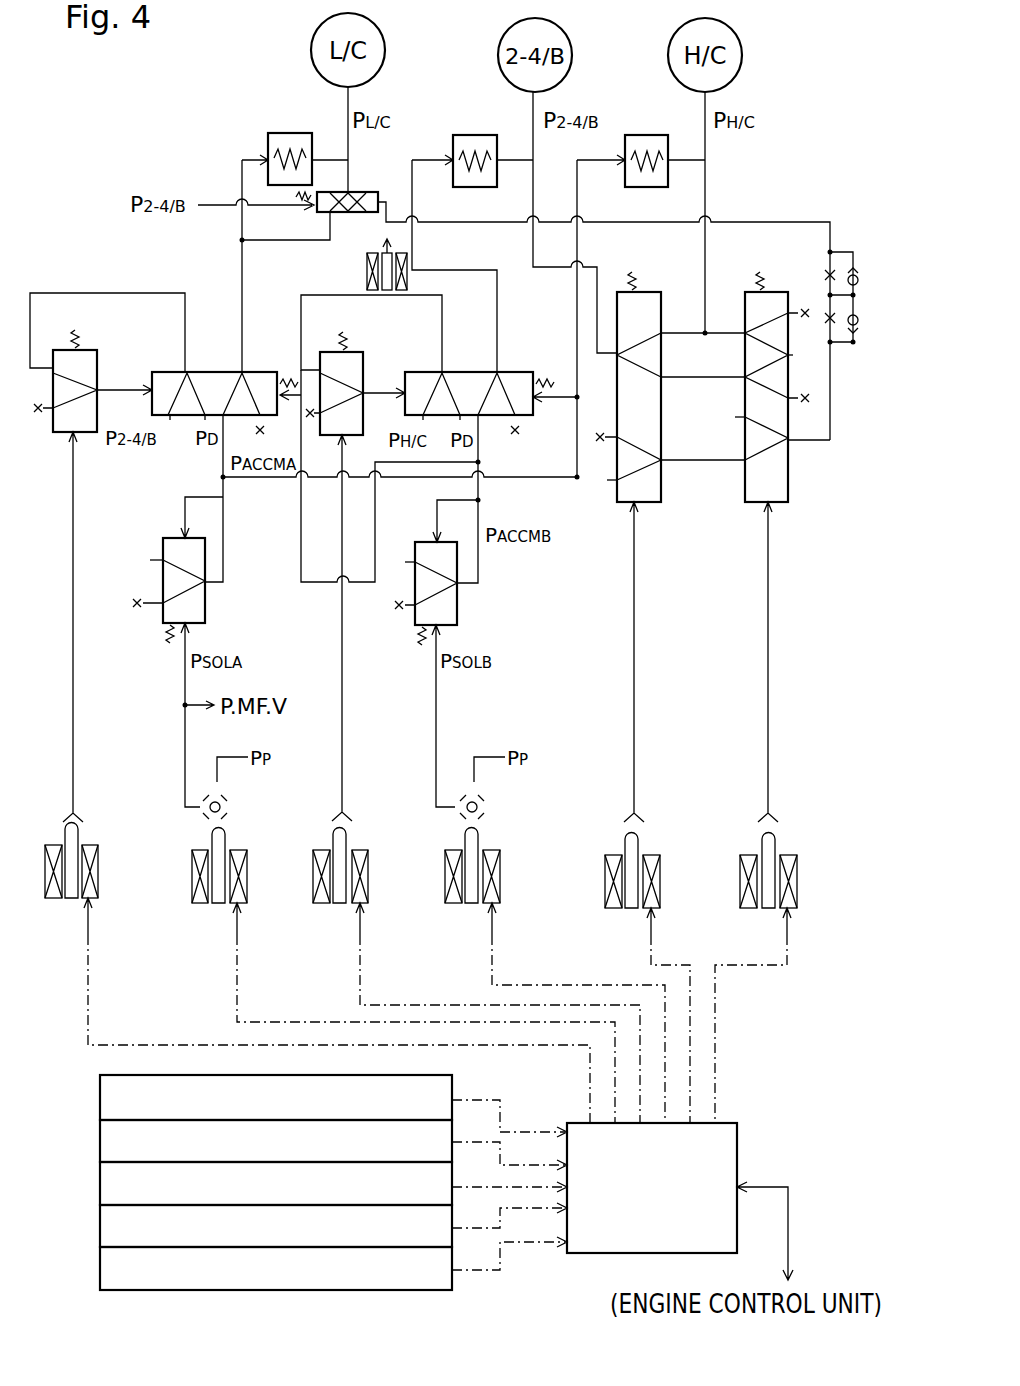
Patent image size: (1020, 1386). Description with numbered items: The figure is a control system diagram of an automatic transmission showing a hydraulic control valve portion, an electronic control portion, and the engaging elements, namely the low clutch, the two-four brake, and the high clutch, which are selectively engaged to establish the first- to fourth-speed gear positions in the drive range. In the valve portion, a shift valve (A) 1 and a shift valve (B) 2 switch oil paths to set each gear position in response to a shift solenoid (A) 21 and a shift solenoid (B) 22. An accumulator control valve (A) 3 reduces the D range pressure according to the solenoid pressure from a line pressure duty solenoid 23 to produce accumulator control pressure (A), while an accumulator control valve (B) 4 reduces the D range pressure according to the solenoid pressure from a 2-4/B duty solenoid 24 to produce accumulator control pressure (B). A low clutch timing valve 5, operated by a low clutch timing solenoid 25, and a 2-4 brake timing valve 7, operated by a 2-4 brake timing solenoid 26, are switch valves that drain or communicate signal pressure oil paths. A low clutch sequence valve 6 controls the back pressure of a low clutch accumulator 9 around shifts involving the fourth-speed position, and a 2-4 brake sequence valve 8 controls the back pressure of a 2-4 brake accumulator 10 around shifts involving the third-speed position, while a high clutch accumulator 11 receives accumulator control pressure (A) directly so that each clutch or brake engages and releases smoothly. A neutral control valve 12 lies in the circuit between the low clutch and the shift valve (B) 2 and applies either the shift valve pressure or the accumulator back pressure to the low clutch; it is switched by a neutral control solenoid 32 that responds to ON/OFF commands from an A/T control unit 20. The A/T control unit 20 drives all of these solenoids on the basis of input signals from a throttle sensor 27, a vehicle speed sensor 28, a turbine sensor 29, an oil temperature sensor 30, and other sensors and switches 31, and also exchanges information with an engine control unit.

The shift valve (A) 1 is at (647, 284).
The shift valve (B) 2 is at (775, 284).
The accumulator control valve (A) 3 is at (216, 609).
The accumulator control valve (B) 4 is at (468, 610).
The low clutch timing valve 5 is at (107, 365).
The low clutch sequence valve 6 is at (264, 362).
The 2-4 brake timing valve 7 is at (374, 371).
The 2-4 brake sequence valve 8 is at (518, 363).
The low clutch accumulator 9 is at (289, 124).
The 2-4 brake accumulator 10 is at (478, 126).
The high clutch accumulator 11 is at (651, 124).
The neutral control valve 12 is at (366, 188).
The A/T control unit 20 is at (750, 1159).
The shift solenoid (A) 21 is at (657, 846).
The shift solenoid (B) 22 is at (794, 846).
The line pressure duty solenoid 23 is at (244, 841).
The 2-4/B duty solenoid 24 is at (497, 841).
The low clutch timing solenoid 25 is at (96, 836).
The 2-4 brake timing solenoid 26 is at (366, 841).
The throttle sensor 27 is at (100, 1098).
The vehicle speed sensor 28 is at (100, 1141).
The turbine sensor 29 is at (100, 1183).
The oil temperature sensor 30 is at (100, 1225).
The other sensors and switches 31 is at (100, 1267).
The neutral control solenoid 32 is at (365, 273).